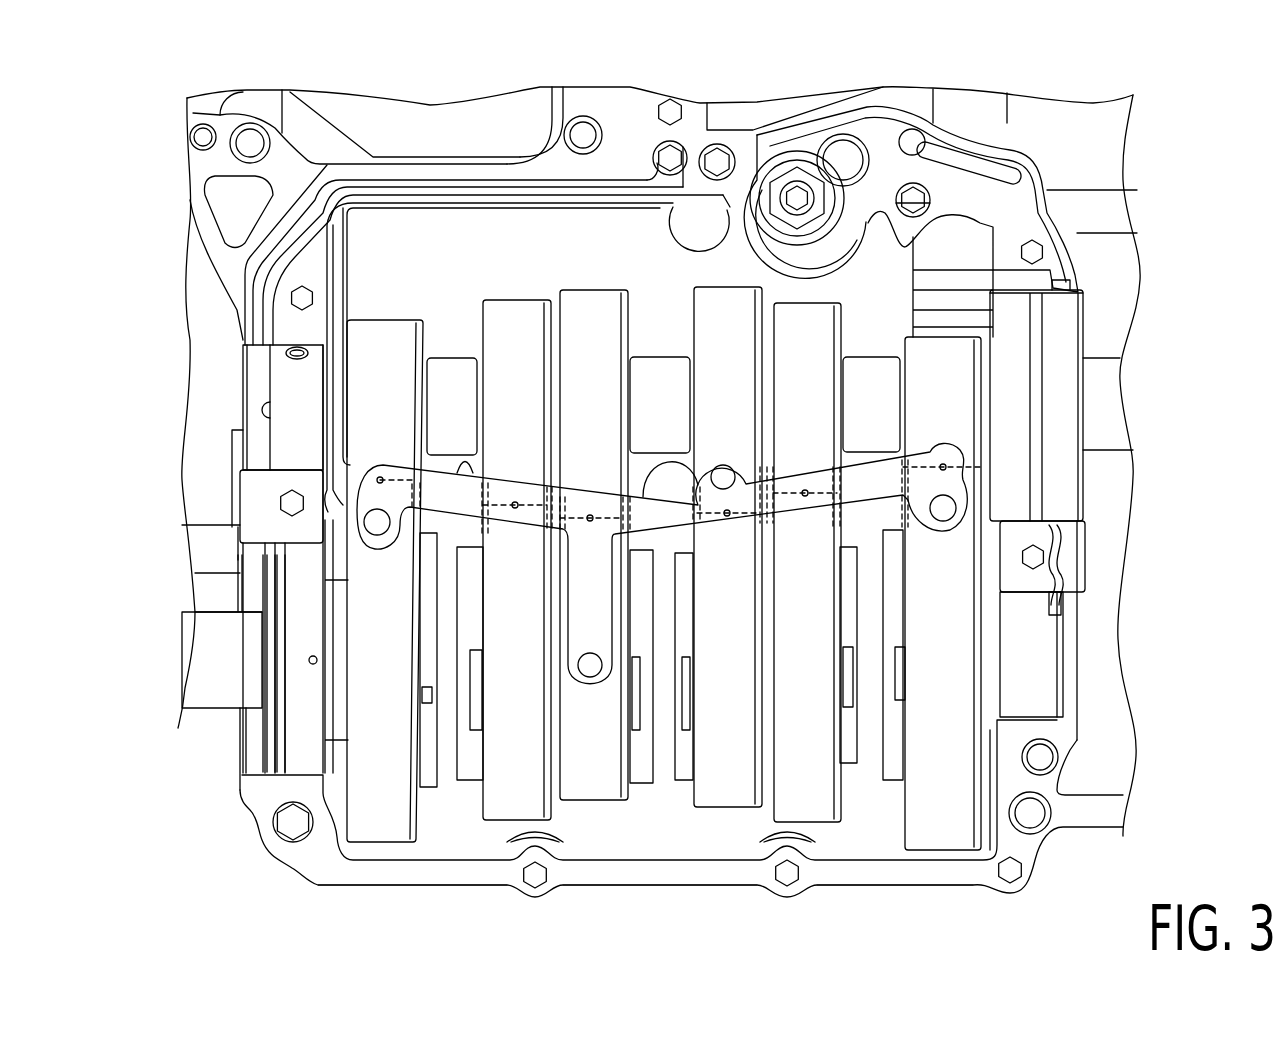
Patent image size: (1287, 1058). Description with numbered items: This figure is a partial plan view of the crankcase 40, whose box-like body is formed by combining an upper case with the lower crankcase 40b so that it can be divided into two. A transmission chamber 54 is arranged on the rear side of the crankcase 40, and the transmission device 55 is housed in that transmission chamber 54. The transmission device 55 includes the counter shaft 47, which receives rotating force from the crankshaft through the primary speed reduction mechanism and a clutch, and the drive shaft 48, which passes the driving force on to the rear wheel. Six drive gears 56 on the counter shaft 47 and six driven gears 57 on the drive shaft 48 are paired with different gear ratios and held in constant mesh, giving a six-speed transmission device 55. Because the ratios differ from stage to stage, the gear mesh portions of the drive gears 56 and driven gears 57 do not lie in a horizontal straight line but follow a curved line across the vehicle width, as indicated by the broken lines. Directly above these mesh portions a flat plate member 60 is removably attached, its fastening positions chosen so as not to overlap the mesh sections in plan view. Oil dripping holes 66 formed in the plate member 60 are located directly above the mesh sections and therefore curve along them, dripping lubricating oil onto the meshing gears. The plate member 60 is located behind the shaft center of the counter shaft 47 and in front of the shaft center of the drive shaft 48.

The crankcase 40 is at (660, 887).
The lower crankcase 40b is at (708, 873).
The counter shaft 47 is at (440, 385).
The drive shaft 48 is at (208, 670).
The transmission chamber 54 is at (608, 822).
The transmission device 55 is at (662, 312).
The drive gears 56 is at (592, 302).
The driven gears 57 is at (597, 792).
The plate member 60 is at (865, 507).
The oil dripping holes 66 is at (590, 518).